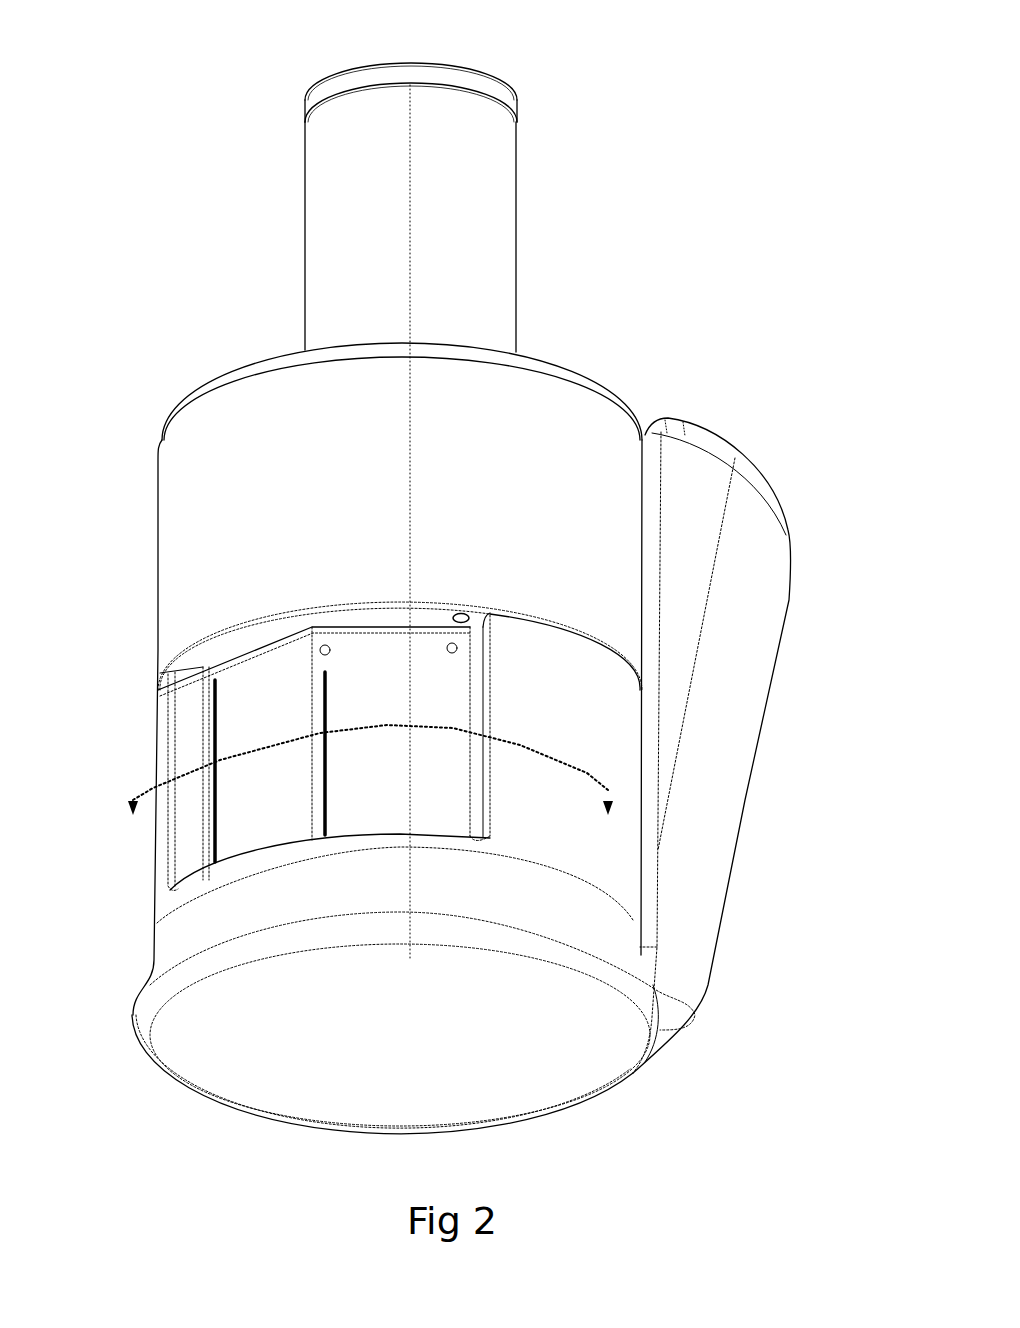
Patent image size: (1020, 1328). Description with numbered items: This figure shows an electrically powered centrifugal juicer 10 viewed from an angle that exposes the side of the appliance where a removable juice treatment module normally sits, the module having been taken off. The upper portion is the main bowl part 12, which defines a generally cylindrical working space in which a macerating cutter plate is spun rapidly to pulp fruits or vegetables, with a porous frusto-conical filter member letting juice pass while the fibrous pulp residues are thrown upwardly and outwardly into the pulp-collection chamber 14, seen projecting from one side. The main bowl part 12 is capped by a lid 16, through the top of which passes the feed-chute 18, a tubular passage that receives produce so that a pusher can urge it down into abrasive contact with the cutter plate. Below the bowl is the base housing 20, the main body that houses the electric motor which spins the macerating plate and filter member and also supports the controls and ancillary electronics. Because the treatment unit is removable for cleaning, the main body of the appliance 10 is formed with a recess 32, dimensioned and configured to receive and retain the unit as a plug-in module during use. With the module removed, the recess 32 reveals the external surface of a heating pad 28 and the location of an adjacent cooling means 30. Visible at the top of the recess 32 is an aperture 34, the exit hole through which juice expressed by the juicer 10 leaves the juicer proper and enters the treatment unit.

The centrifugal juicer 10 is at (146, 323).
The main bowl part 12 is at (192, 505).
The pulp-collection chamber 14 is at (748, 490).
The lid 16 is at (587, 375).
The feed-chute 18 is at (476, 172).
The base housing 20 is at (590, 840).
The heating pad 28 is at (427, 798).
The cooling means 30 is at (262, 798).
The recess 32 is at (233, 645).
The aperture 34 is at (464, 612).